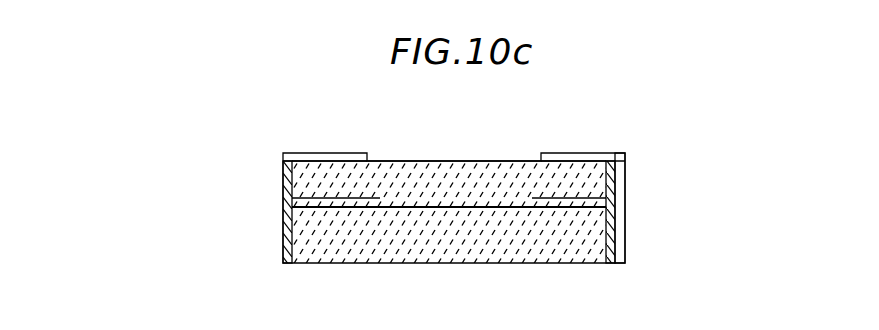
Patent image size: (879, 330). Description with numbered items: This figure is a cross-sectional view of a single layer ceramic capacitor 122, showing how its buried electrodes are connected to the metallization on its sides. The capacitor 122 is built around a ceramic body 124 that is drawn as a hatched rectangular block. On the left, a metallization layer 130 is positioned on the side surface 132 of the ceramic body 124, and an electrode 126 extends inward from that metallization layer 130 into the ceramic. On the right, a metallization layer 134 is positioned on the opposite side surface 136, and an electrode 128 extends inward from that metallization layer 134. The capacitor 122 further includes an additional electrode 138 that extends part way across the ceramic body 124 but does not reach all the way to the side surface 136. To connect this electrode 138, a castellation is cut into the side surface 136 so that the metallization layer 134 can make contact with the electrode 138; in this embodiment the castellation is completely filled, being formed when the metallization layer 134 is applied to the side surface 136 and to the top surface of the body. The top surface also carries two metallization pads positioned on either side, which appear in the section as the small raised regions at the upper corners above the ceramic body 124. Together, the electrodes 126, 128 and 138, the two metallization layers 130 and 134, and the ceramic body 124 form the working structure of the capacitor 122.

The capacitor 122 is at (634, 105).
The ceramic body 124 is at (474, 181).
The electrode 126 is at (328, 198).
The electrode 128 is at (577, 193).
The metallization layer 130 is at (292, 218).
The side surface 132 is at (290, 243).
The metallization layer 134 is at (612, 207).
The side surface 136 is at (618, 245).
The electrode 138 is at (416, 192).